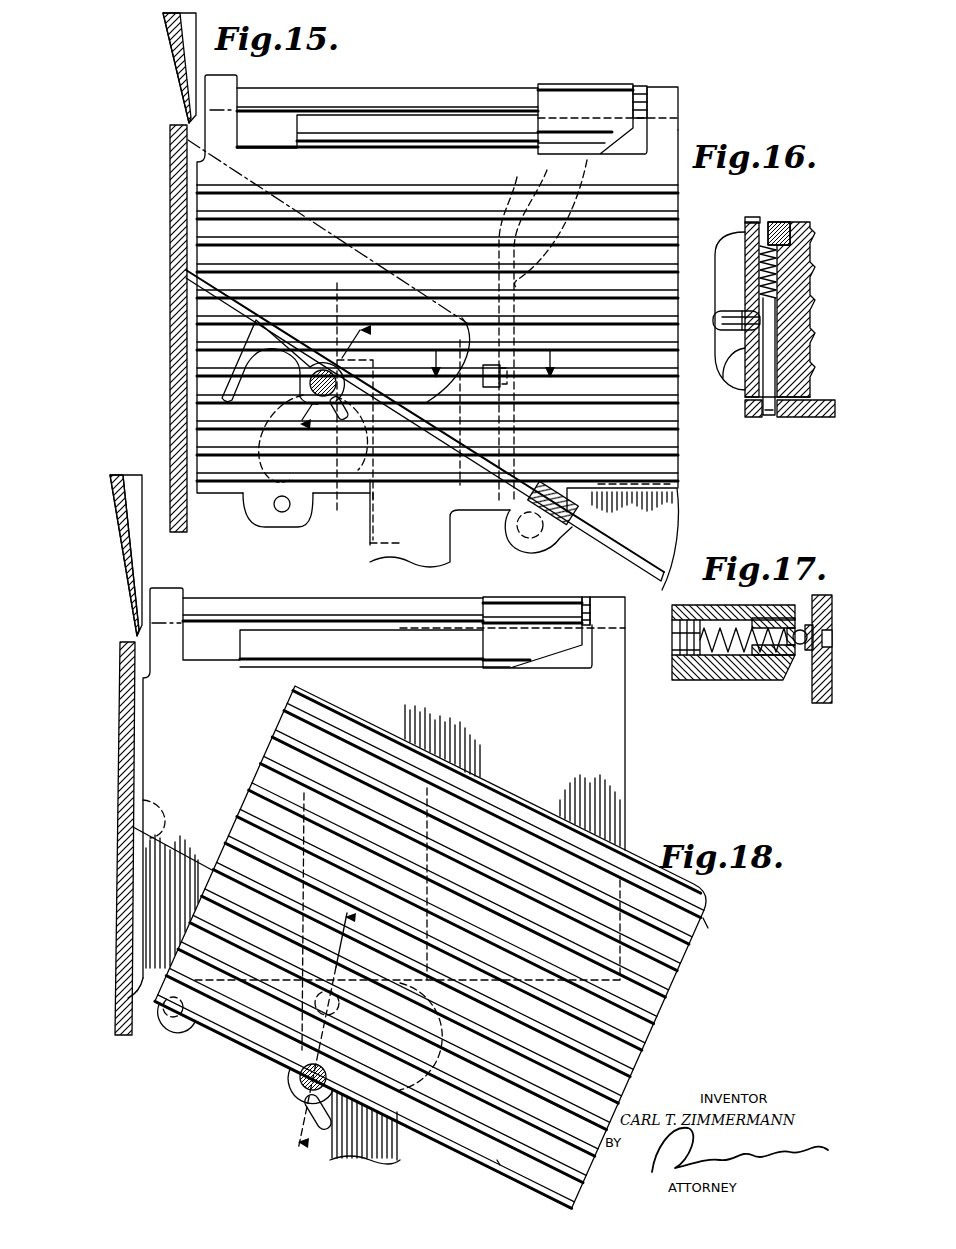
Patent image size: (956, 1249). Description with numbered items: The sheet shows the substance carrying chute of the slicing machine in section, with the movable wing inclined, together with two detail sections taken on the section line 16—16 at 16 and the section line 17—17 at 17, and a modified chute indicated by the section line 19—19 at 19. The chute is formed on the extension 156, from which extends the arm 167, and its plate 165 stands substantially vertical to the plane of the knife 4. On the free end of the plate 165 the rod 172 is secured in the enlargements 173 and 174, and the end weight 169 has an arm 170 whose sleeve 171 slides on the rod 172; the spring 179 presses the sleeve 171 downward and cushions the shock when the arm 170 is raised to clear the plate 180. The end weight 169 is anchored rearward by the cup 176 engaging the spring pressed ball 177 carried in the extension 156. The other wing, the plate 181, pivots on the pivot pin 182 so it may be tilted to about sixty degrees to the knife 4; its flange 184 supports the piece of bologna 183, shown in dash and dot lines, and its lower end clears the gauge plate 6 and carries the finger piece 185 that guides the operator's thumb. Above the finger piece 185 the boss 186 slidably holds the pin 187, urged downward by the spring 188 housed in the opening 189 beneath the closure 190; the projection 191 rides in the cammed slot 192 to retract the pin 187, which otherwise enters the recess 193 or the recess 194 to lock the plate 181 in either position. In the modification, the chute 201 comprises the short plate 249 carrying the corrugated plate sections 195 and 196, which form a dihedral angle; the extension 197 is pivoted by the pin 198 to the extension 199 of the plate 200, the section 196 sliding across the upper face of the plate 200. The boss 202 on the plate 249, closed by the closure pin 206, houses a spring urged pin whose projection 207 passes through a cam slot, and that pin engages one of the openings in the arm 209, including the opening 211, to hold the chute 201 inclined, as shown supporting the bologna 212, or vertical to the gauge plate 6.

In FIG. 15, the knife 4 is at (185, 85).
In FIG. 18, the knife 4 is at (120, 553).
In FIG. 15, the gauge plate 6 is at (166, 330).
In FIG. 18, the gauge plate 6 is at (113, 870).
In FIG. 15, the section line 16— 16 is at (340, 398).
In FIG. 15, the section line 17— 17 is at (495, 362).
In FIG. 18, the section line 19— 19 is at (338, 1041).
In FIG. 15, the extension of the chute 156 is at (490, 324).
In FIG. 17, the extension of the chute 156 is at (676, 673).
In FIG. 15, the plate 165 is at (678, 445).
In FIG. 16, the plate 165 is at (822, 418).
In FIG. 15, the arm 167 is at (372, 552).
In FIG. 15, the end weight 169 is at (548, 270).
In FIG. 17, the end weight 169 is at (814, 700).
In FIG. 15, the arm 170 is at (512, 176).
In FIG. 15, the sleeve 171 is at (552, 85).
In FIG. 15, the rod 172 is at (372, 92).
In FIG. 15, the enlargement 173 is at (662, 87).
In FIG. 15, the enlargement 174 is at (240, 85).
In FIG. 17, the cup 176 is at (803, 650).
In FIG. 15, the spring pressed ball 177 is at (506, 392).
In FIG. 17, the spring pressed ball 177 is at (786, 660).
In FIG. 15, the spring 179 is at (640, 86).
In FIG. 15, the plate 180 is at (415, 130).
In FIG. 15, the plate 181 is at (605, 548).
In FIG. 15, the pivot pin 182 is at (525, 540).
In FIG. 15, the bologna 183 is at (256, 176).
In FIG. 15, the flange 184 is at (668, 516).
In FIG. 15, the finger piece 185 is at (225, 388).
In FIG. 16, the finger piece 185 is at (720, 245).
In FIG. 15, the boss 186 is at (313, 442).
In FIG. 16, the boss 186 is at (745, 385).
In FIG. 16, the pin 187 is at (767, 343).
In FIG. 16, the spring 188 is at (750, 235).
In FIG. 16, the opening 189 is at (790, 245).
In FIG. 15, the closure 190 is at (322, 370).
In FIG. 16, the closure 190 is at (772, 222).
In FIG. 15, the projection 191 is at (366, 428).
In FIG. 16, the projection 191 is at (715, 318).
In FIG. 16, the cammed slot 192 is at (742, 283).
In FIG. 15, the recess 193 is at (272, 512).
In FIG. 16, the recess 194 is at (768, 418).
In FIG. 18, the corrugated plate section 195 is at (497, 1165).
In FIG. 18, the corrugated plate section 196 is at (672, 1028).
In FIG. 18, the extension 197 is at (180, 1030).
In FIG. 18, the pin 198 is at (162, 1018).
In FIG. 18, the extension 199 is at (140, 998).
In FIG. 18, the plate 200 is at (384, 783).
In FIG. 18, the chute 201 is at (714, 938).
In FIG. 18, the boss 202 is at (297, 1080).
In FIG. 18, the closure pin 206 is at (300, 1093).
In FIG. 18, the projection 207 is at (302, 1115).
In FIG. 18, the arm 209 is at (280, 1052).
In FIG. 18, the opening 211 is at (282, 1032).
In FIG. 18, the bologna 212 is at (148, 803).
In FIG. 18, the short plate 249 is at (446, 1130).